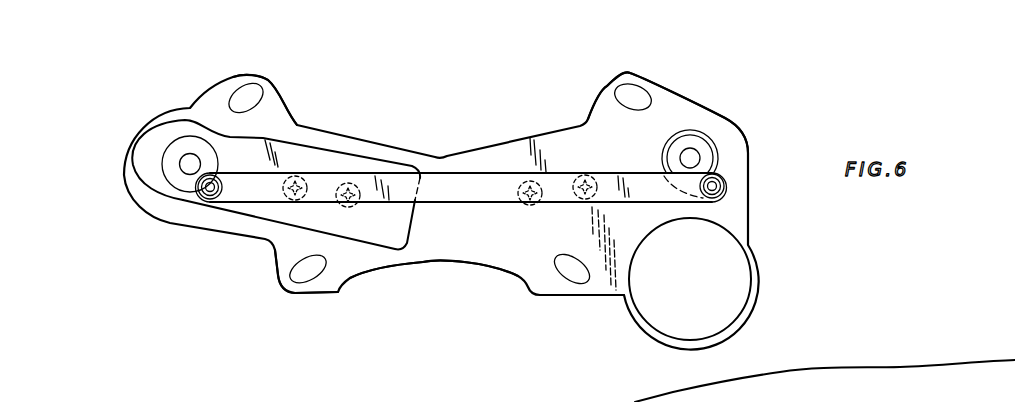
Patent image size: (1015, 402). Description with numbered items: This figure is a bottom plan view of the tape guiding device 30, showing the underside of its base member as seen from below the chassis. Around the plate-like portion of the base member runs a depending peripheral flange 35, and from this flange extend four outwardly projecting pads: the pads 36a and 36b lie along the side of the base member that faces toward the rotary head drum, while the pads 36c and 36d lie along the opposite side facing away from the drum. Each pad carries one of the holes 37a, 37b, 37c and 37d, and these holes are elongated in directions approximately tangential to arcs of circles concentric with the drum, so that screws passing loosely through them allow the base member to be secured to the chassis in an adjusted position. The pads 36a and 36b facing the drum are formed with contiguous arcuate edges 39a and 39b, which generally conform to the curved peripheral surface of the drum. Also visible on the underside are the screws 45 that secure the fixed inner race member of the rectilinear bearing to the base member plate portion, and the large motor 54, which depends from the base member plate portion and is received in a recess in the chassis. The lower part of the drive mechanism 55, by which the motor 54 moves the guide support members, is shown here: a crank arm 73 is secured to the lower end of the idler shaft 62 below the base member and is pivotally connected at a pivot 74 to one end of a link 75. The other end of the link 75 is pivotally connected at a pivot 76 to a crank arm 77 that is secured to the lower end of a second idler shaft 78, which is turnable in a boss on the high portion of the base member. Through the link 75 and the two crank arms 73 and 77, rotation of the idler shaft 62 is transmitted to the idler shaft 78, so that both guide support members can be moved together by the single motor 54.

The tape guiding device 30 is at (528, 312).
The peripheral flange 35 is at (396, 153).
The pad 36a is at (612, 284).
The pad 36b is at (338, 289).
The pad 36c is at (277, 113).
The pad 36d is at (707, 128).
The hole 37a is at (565, 276).
The hole 37b is at (300, 279).
The hole 37c is at (260, 92).
The hole 37d is at (631, 88).
The arcuate edge 39a is at (526, 283).
The arcuate edge 39b is at (358, 276).
The screws 45 is at (360, 211).
The motor 54 is at (730, 287).
The drive mechanism 55 is at (608, 143).
The idler shaft 62 is at (692, 160).
The crank arm 73 is at (712, 163).
The pivotal connection 74 is at (719, 194).
The link 75 is at (465, 200).
The pivotal connection 76 is at (226, 187).
The crank arm 77 is at (188, 190).
The idler shaft 78 is at (191, 153).